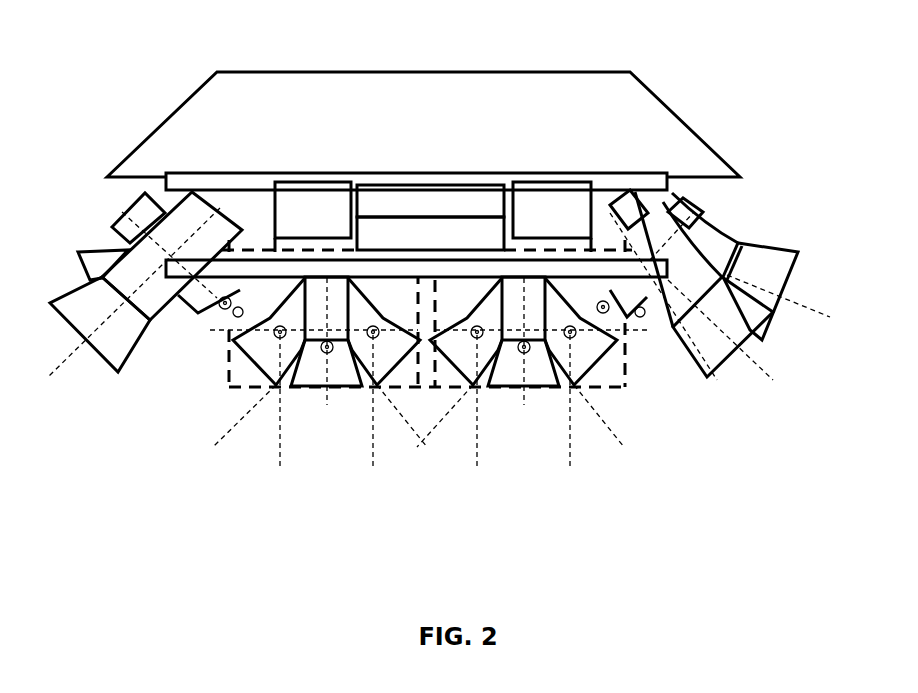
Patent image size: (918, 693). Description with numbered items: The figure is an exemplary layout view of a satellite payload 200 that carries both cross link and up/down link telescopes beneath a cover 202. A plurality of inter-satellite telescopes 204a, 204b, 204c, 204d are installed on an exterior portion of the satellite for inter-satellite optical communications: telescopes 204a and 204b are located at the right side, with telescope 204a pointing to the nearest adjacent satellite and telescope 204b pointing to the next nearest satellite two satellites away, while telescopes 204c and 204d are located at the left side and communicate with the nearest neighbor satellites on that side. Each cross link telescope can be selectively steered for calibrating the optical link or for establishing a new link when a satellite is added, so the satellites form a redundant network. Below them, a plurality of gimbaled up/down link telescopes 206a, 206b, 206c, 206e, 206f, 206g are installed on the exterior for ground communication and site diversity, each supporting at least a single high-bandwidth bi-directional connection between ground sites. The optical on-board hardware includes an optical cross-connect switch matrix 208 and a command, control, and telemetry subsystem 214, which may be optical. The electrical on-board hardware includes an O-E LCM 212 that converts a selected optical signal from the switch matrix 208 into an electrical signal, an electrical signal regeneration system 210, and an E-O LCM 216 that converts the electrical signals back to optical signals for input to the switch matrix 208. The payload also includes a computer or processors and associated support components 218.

The satellite payload 200 is at (445, 249).
The cover 202 is at (640, 85).
The inter-satellite telescope 204a is at (779, 250).
The inter-satellite telescope 204b is at (717, 375).
The inter-satellite telescope 204c is at (78, 263).
The inter-satellite telescope 204d is at (112, 352).
The up/down link telescope 206a is at (232, 340).
The up/down link telescope 206b is at (302, 392).
The up/down link telescope 206c is at (372, 385).
The up/down link telescope 206e is at (452, 400).
The up/down link telescope 206f is at (532, 387).
The up/down link telescope 206g is at (613, 357).
The optical cross-connect switch matrix 208 is at (431, 193).
The electrical signal regeneration system 210 is at (421, 232).
The O-E LCM 212 is at (290, 200).
The command, control, and telemetry subsystem 214 is at (133, 176).
The E-O LCM 216 is at (484, 176).
The computer or processors and associated support components 218 is at (647, 205).